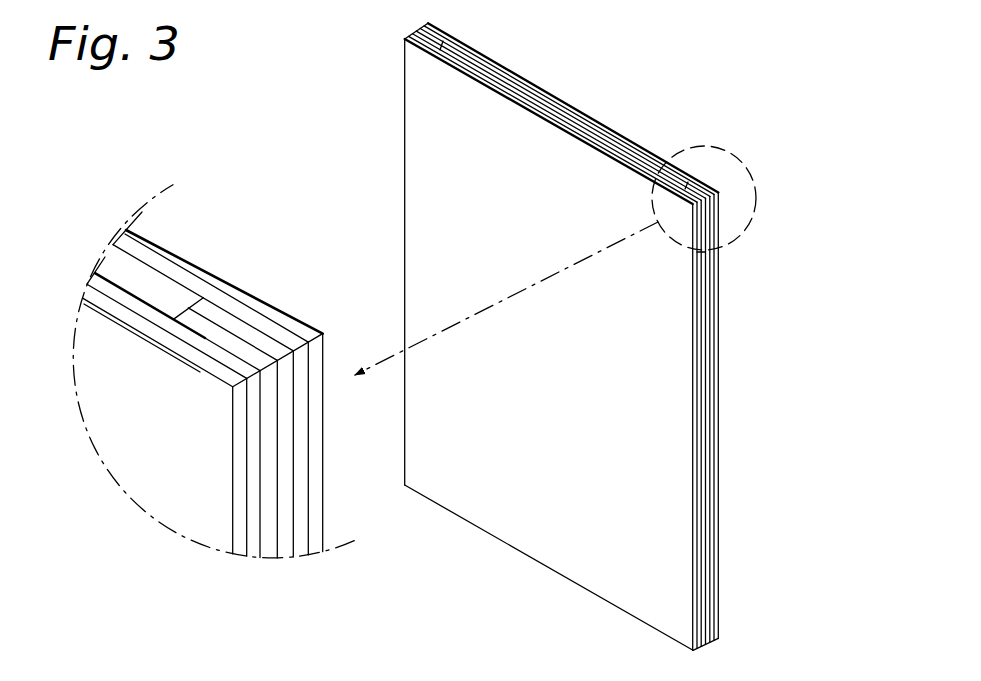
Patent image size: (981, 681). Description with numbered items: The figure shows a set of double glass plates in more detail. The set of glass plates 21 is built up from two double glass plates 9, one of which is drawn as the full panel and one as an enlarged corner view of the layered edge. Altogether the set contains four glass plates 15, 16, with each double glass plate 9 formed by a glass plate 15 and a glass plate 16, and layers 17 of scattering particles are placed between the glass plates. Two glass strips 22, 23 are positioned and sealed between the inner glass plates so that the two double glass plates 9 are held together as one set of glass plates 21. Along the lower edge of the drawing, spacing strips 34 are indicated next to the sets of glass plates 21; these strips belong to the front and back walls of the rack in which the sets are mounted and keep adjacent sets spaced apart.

The double glass plate 9 is at (574, 123).
The glass plate 15 is at (187, 346).
The glass plate 16 is at (222, 360).
The layer of scattering particles 17 is at (152, 318).
The set of glass plates 21 is at (728, 402).
The glass strip 22 is at (270, 543).
The glass strip 23 is at (288, 500).
The spacing strip 34 is at (540, 669).